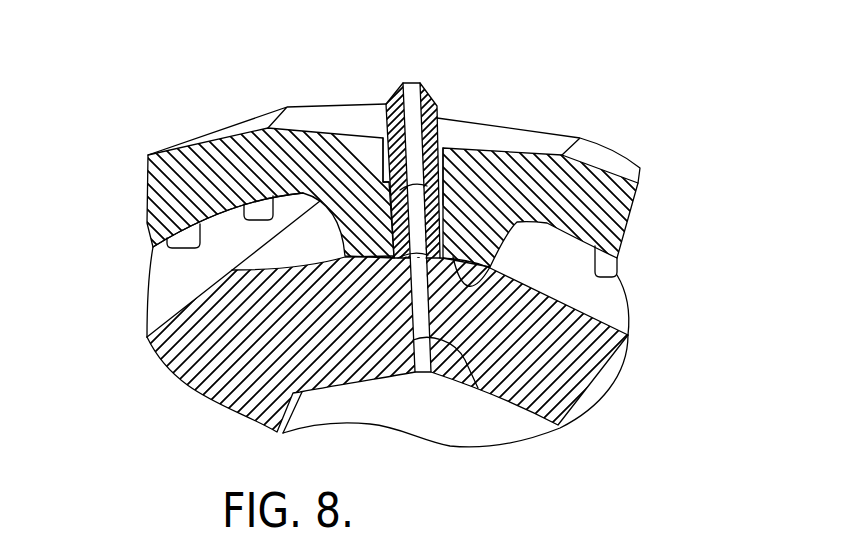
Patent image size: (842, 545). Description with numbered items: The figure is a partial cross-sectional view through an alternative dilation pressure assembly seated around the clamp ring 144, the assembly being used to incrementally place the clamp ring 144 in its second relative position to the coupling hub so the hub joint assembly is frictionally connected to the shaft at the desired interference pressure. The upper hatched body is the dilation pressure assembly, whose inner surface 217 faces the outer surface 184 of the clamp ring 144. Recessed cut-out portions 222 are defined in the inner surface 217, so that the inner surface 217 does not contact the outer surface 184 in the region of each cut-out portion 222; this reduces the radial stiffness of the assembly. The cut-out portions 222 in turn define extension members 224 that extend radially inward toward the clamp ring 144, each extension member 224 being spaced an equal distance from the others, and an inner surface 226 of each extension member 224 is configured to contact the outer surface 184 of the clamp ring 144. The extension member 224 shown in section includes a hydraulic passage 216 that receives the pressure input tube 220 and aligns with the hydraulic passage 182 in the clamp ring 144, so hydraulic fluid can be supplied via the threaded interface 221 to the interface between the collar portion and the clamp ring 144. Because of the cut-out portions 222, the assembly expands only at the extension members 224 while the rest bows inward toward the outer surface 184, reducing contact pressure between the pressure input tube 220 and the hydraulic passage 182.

The clamp ring 144 is at (157, 363).
The hydraulic passage 182 is at (477, 388).
The outer surface 184 is at (244, 261).
The hydraulic passage 216 is at (440, 185).
The inner surface 217 is at (274, 200).
The pressure input tube 220 is at (423, 102).
The threaded interface 221 is at (397, 256).
The recessed cut-out portion 222 is at (202, 233).
The extension member 224 is at (457, 243).
The inner surface 226 is at (502, 278).